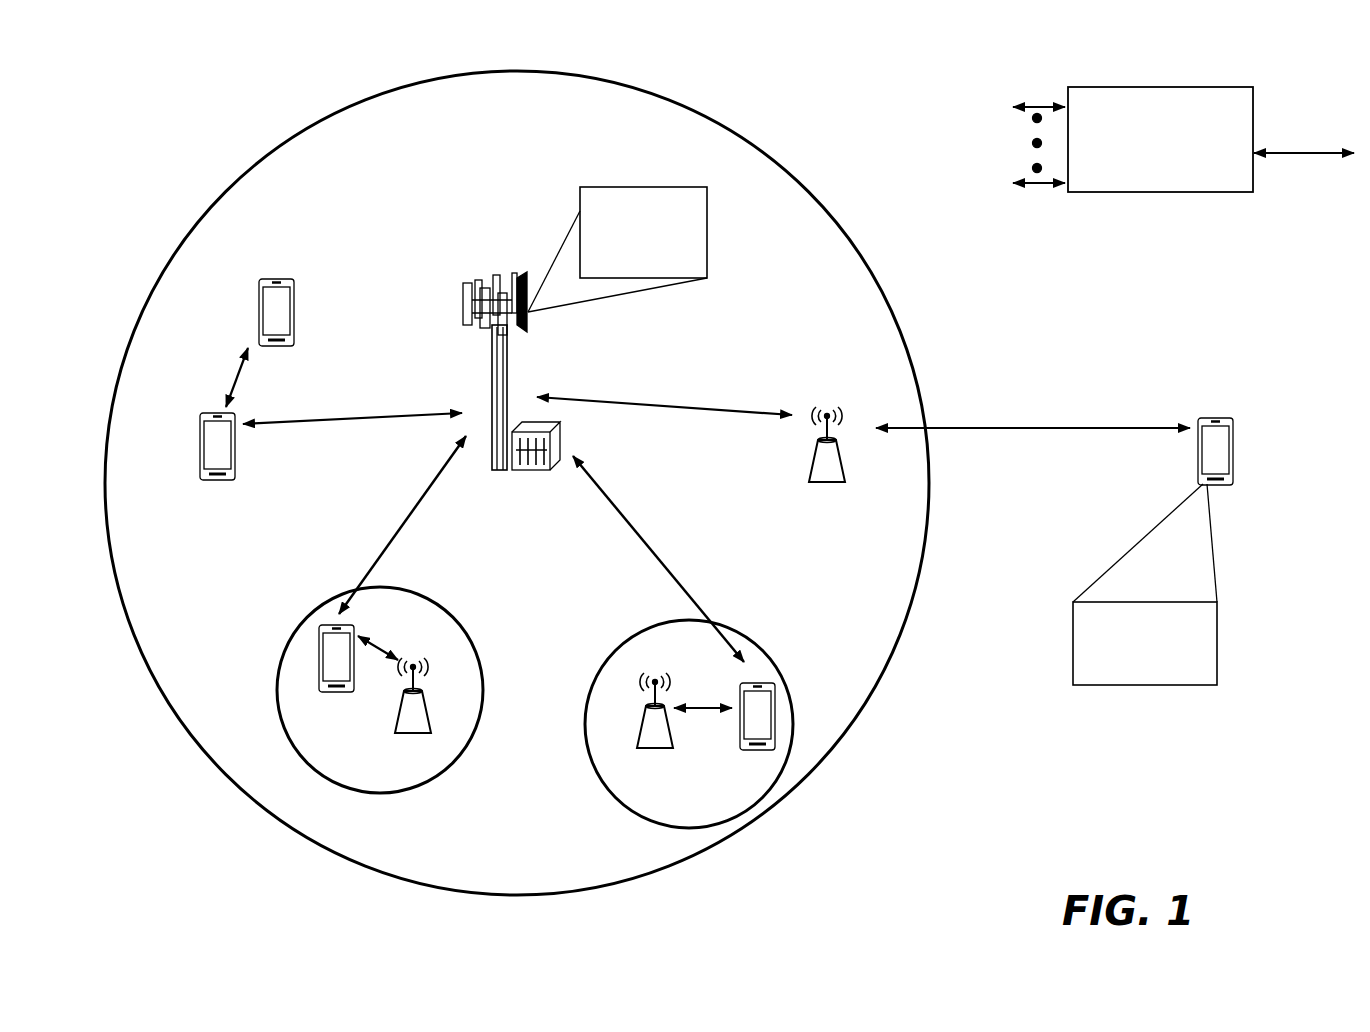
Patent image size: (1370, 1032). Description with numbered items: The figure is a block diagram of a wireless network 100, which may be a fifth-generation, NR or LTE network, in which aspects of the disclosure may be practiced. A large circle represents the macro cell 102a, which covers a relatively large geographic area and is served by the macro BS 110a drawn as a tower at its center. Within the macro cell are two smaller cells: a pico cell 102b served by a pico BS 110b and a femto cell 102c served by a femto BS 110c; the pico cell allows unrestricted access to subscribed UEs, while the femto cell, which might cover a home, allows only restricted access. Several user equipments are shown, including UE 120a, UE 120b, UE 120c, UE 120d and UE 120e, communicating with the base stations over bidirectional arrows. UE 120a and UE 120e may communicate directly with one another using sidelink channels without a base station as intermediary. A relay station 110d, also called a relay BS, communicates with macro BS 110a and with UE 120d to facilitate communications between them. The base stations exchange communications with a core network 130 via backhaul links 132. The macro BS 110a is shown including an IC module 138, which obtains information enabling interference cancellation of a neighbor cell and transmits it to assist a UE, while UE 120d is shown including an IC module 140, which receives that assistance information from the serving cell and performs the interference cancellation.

The wireless network 100 is at (180, 112).
The macro cell 102a is at (797, 180).
The pico cell 102b is at (470, 632).
The femto cell 102c is at (628, 637).
The macro BS 110a is at (518, 268).
The pico BS 110b is at (434, 718).
The femto BS 110c is at (642, 728).
The relay station 110d is at (830, 405).
The UE 120a is at (200, 440).
The UE 120b is at (326, 693).
The UE 120c is at (746, 752).
The UE 120d is at (1228, 487).
The UE 120e is at (260, 297).
The core network 130 is at (1137, 86).
The backhaul links 132 is at (1036, 100).
The IC module 138 is at (707, 222).
The IC module 140 is at (1146, 686).